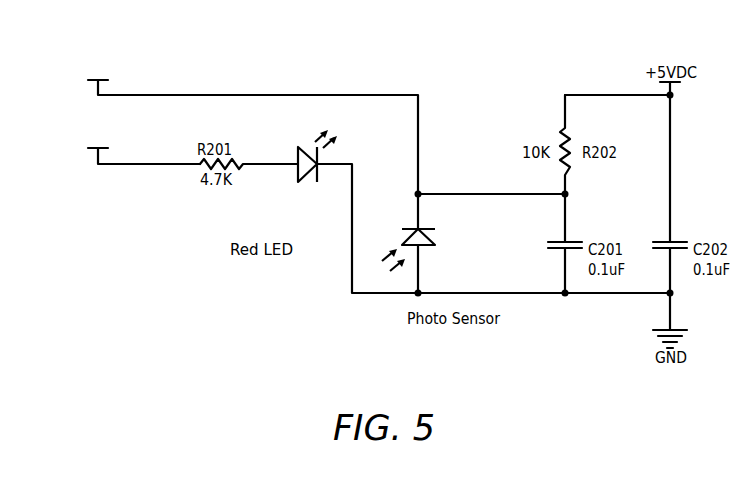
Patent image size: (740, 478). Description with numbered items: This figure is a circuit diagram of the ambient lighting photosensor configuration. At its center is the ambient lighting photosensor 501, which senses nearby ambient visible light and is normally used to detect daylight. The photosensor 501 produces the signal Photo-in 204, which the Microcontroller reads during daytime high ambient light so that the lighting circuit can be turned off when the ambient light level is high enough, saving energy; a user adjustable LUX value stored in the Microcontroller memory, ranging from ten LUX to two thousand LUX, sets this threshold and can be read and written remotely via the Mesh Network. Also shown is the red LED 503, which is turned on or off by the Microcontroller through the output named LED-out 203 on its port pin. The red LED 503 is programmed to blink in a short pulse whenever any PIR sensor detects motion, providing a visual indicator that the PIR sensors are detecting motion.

The Photo-in 204 is at (93, 62).
The LED-out 203 is at (72, 128).
The red LED LED1 503 is at (363, 130).
The ambient lighting photosensor PS1 501 is at (458, 247).